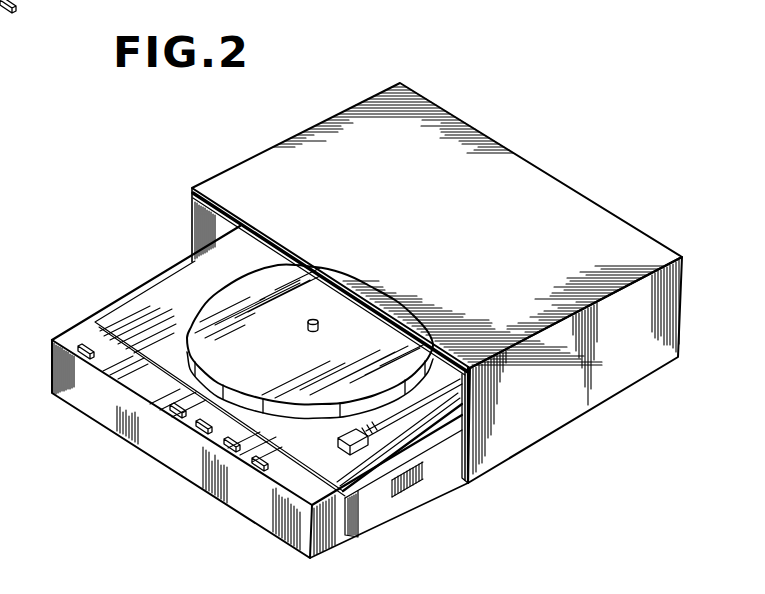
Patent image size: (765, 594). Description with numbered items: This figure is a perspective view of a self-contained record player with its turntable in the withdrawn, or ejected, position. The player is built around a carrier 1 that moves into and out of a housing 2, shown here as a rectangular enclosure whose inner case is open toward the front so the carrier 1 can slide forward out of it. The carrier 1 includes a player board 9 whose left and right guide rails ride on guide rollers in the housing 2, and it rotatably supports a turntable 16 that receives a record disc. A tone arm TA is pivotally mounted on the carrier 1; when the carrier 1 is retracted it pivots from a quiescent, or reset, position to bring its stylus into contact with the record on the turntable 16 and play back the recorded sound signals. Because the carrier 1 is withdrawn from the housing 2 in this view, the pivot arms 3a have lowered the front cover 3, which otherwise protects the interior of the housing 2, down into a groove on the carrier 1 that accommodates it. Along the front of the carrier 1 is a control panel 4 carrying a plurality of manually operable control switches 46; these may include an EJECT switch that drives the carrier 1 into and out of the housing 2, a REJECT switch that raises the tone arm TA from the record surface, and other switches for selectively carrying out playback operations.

The carrier 1 is at (98, 313).
The housing 2 is at (272, 148).
The front cover 3 is at (367, 505).
The pivot arms 3a is at (440, 447).
The control panel 4 is at (280, 478).
The player board 9 is at (158, 333).
The turntable 16 is at (217, 307).
The control switches 46 is at (170, 410).
The tone arm TA is at (398, 418).